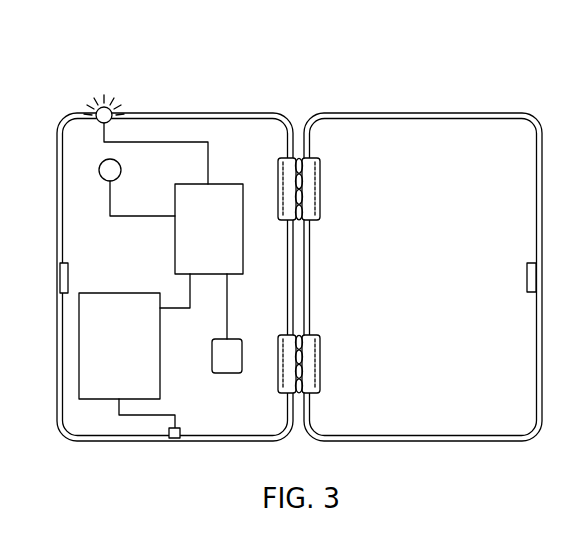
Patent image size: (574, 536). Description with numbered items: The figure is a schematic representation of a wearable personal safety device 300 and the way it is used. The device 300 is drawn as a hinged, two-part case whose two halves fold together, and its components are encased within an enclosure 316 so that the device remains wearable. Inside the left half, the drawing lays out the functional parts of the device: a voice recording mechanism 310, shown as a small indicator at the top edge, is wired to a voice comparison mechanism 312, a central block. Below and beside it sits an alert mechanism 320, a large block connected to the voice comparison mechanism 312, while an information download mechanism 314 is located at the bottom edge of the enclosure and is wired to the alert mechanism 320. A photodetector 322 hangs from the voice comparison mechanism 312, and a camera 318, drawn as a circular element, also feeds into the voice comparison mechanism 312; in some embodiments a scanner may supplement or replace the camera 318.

The personal safety device 300 is at (466, 45).
The voice recording mechanism 310 is at (97, 122).
The voice comparison mechanism 312 is at (226, 184).
The information download mechanism 314 is at (180, 428).
The first housing portion 316 is at (193, 113).
The camera 318 is at (122, 170).
The alert mechanism 320 is at (118, 293).
The photodetector 322 is at (237, 339).